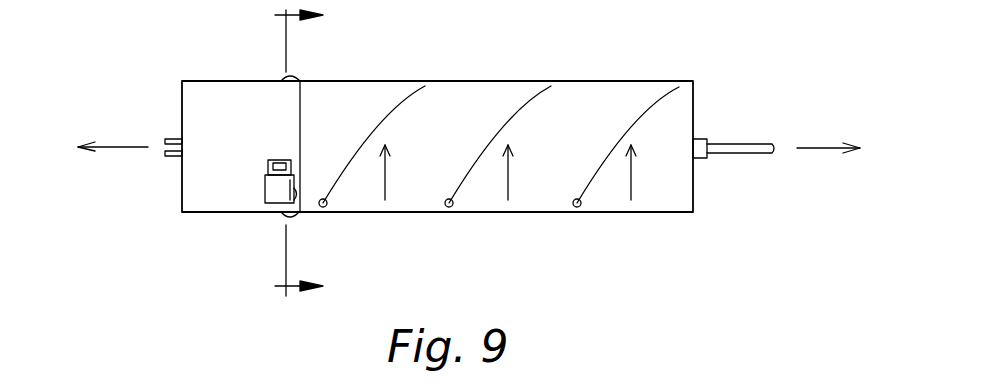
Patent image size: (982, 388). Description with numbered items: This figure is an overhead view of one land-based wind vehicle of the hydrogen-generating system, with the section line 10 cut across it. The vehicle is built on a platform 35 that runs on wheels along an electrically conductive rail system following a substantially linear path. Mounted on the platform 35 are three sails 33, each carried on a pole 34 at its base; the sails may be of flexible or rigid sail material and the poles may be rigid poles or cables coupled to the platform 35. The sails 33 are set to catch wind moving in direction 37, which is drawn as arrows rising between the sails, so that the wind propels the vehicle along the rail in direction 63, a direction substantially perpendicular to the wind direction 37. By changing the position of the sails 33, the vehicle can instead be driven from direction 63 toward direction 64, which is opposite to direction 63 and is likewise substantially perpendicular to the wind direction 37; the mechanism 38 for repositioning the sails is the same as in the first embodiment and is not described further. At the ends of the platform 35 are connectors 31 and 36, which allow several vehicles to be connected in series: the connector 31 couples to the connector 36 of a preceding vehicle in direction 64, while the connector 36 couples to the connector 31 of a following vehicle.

The section line 10- 10 is at (318, 153).
The connector 31 is at (733, 143).
The sails 33 is at (410, 90).
The poles 34 is at (328, 208).
The platform 35 is at (383, 88).
The connector 36 is at (168, 138).
The wind direction 37 is at (387, 176).
The actuator 38 is at (265, 201).
The direction of travel 63 is at (130, 145).
The opposite direction of travel 64 is at (823, 148).